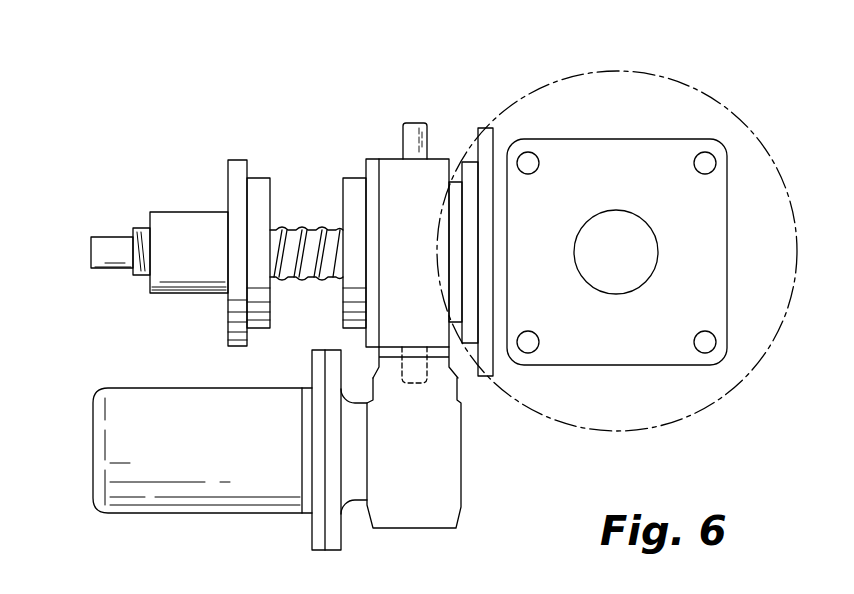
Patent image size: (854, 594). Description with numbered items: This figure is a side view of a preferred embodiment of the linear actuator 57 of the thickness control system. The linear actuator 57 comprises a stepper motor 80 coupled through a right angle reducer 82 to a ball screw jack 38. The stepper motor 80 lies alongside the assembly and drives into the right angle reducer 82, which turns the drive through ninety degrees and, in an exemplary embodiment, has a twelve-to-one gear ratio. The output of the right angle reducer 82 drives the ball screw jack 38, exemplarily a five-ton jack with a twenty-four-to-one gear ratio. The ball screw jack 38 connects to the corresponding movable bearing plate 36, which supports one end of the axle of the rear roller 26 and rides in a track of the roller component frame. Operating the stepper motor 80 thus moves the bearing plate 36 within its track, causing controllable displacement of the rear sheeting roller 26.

The linear actuator 57 is at (154, 95).
The ball screw jack 38 is at (387, 173).
The rear roller 26 is at (703, 90).
The movable bearing plate 36 is at (563, 139).
The right angle reducer 82 is at (447, 458).
The stepper motor 80 is at (157, 500).